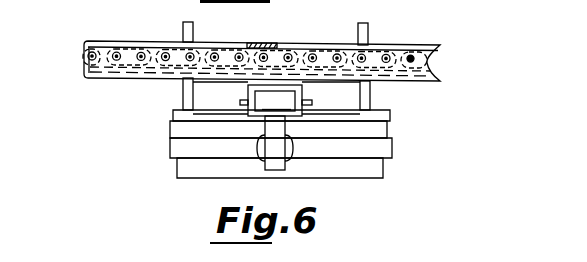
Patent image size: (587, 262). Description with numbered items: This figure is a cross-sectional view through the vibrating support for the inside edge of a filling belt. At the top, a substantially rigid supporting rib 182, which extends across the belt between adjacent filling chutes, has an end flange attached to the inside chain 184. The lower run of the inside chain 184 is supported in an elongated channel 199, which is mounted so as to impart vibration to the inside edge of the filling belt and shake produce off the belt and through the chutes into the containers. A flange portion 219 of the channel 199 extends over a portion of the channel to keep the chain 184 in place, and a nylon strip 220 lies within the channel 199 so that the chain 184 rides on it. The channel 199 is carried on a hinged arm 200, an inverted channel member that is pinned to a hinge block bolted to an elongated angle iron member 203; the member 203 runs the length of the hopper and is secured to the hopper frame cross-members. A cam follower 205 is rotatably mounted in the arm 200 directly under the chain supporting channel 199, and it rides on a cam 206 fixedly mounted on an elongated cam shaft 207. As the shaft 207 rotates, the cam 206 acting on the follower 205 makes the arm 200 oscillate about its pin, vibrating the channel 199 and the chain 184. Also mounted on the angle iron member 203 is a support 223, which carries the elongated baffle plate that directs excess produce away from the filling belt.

The supporting rib 182 is at (258, 43).
The inside chain 184 is at (388, 43).
The elongated channel 199 is at (418, 78).
The hinged arm 200 is at (245, 84).
The elongated angle iron member 203 is at (183, 130).
The cam follower 205 is at (276, 100).
The cam 206 is at (273, 145).
The cam shaft 207 is at (382, 152).
The flange portion 219 is at (110, 42).
The nylon strip 220 is at (427, 68).
The support 223 is at (185, 25).